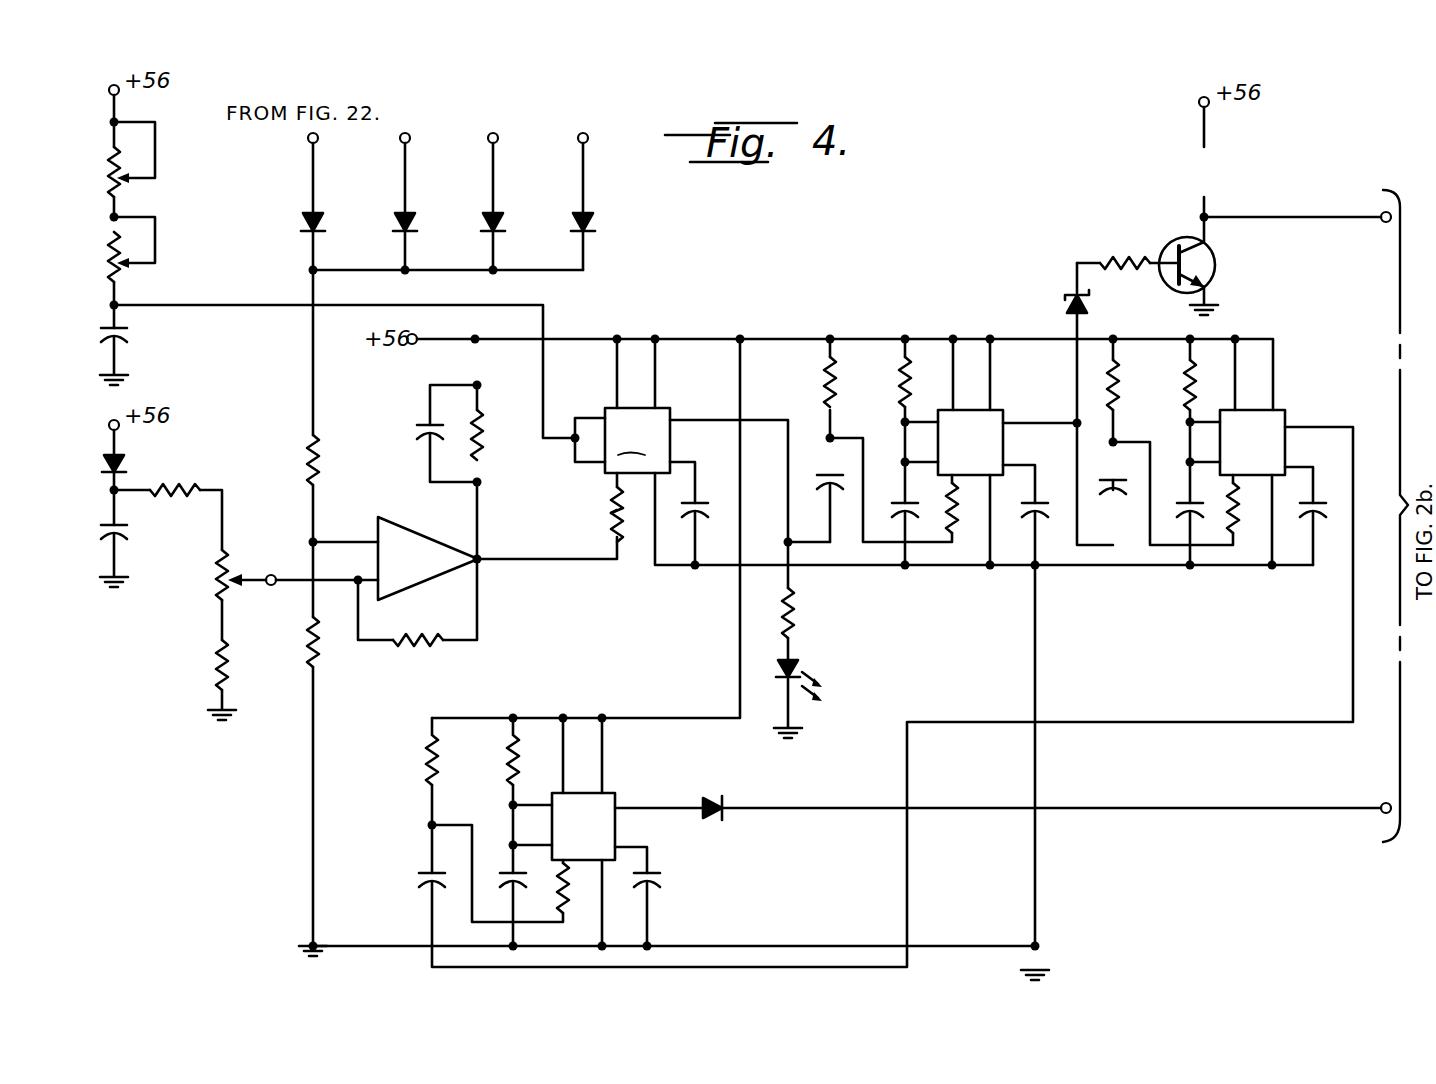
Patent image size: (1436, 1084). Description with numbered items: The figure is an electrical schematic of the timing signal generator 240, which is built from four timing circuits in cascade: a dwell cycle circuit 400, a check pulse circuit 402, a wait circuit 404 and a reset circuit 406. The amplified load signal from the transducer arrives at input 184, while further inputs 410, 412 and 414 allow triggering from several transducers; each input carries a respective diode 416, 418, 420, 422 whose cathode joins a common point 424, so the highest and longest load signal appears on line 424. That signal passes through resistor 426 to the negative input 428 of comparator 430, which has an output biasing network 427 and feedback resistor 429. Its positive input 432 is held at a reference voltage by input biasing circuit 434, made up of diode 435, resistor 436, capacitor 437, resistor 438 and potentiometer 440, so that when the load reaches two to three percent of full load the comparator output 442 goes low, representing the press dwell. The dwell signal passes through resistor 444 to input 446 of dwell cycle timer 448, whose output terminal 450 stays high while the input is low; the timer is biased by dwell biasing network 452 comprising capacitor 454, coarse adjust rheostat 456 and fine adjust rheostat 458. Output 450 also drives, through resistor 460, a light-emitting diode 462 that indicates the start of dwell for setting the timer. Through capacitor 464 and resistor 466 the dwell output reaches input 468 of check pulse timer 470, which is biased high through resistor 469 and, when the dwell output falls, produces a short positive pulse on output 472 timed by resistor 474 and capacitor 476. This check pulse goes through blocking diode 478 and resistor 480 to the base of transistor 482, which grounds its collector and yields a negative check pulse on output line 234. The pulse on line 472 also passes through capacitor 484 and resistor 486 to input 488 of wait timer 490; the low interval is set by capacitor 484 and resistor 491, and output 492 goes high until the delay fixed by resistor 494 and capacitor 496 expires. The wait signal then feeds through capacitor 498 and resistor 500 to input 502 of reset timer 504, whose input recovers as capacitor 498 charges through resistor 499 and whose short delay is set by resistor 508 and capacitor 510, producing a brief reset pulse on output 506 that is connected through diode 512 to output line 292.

The input 184 is at (315, 162).
The output line 234 is at (1380, 213).
The timing signal generator 240 is at (1182, 863).
The output line 292 is at (1367, 815).
The dwell cycle circuit 400 is at (630, 588).
The check pulse circuit 402 is at (942, 578).
The wait circuit 404 is at (1249, 582).
The reset circuit 406 is at (692, 886).
The input 410 is at (407, 165).
The input 412 is at (495, 165).
The input 414 is at (585, 170).
The diode 416 is at (320, 224).
The diode 418 is at (412, 224).
The diode 420 is at (500, 226).
The diode 422 is at (592, 226).
The common point 424 is at (313, 270).
The resistor 426 is at (318, 462).
The output biasing network 427 is at (482, 443).
The negative input 428 is at (343, 540).
The feedback resistor 429 is at (418, 648).
The comparator 430 is at (400, 537).
The positive input 432 is at (320, 573).
The input biasing circuit 434 is at (178, 632).
The diode 435 is at (127, 462).
The resistor 436 is at (190, 485).
The capacitor 437 is at (128, 535).
The resistor 438 is at (220, 683).
The potentiometer 440 is at (220, 588).
The output 442 is at (448, 566).
The resistor 444 is at (614, 525).
The input 446 is at (614, 490).
The dwell cycle timer 448 is at (622, 440).
The output terminal 450 is at (697, 418).
The dwell biasing network 452 is at (178, 328).
The capacitor 454 is at (118, 340).
The coarse adjust rheostat 456 is at (130, 175).
The fine adjust rheostat 458 is at (130, 262).
The resistor 460 is at (794, 614).
The light-emitting diode 462 is at (798, 664).
The capacitor 464 is at (822, 472).
The resistor 466 is at (960, 550).
The input 468 is at (970, 442).
The resistor 469 is at (826, 393).
The check pulse timer 470 is at (993, 430).
The output 472 is at (1028, 420).
The resistor 474 is at (903, 388).
The capacitor 476 is at (900, 518).
The blocking diode 478 is at (1067, 304).
The resistor 480 is at (1120, 260).
The transistor 482 is at (1214, 264).
The capacitor 484 is at (1108, 493).
The resistor 486 is at (1240, 508).
The input 488 is at (1252, 442).
The wait timer 490 is at (1278, 430).
The resistor 491 is at (1120, 404).
The output 492 is at (1338, 424).
The resistor 494 is at (1186, 395).
The capacitor 496 is at (1183, 516).
The capacitor 498 is at (421, 877).
The resistor 499 is at (428, 755).
The resistor 500 is at (580, 900).
The input 502 is at (583, 826).
The reset timer 504 is at (612, 815).
The output 506 is at (667, 806).
The resistor 508 is at (513, 763).
The capacitor 510 is at (510, 870).
The diode 512 is at (712, 812).